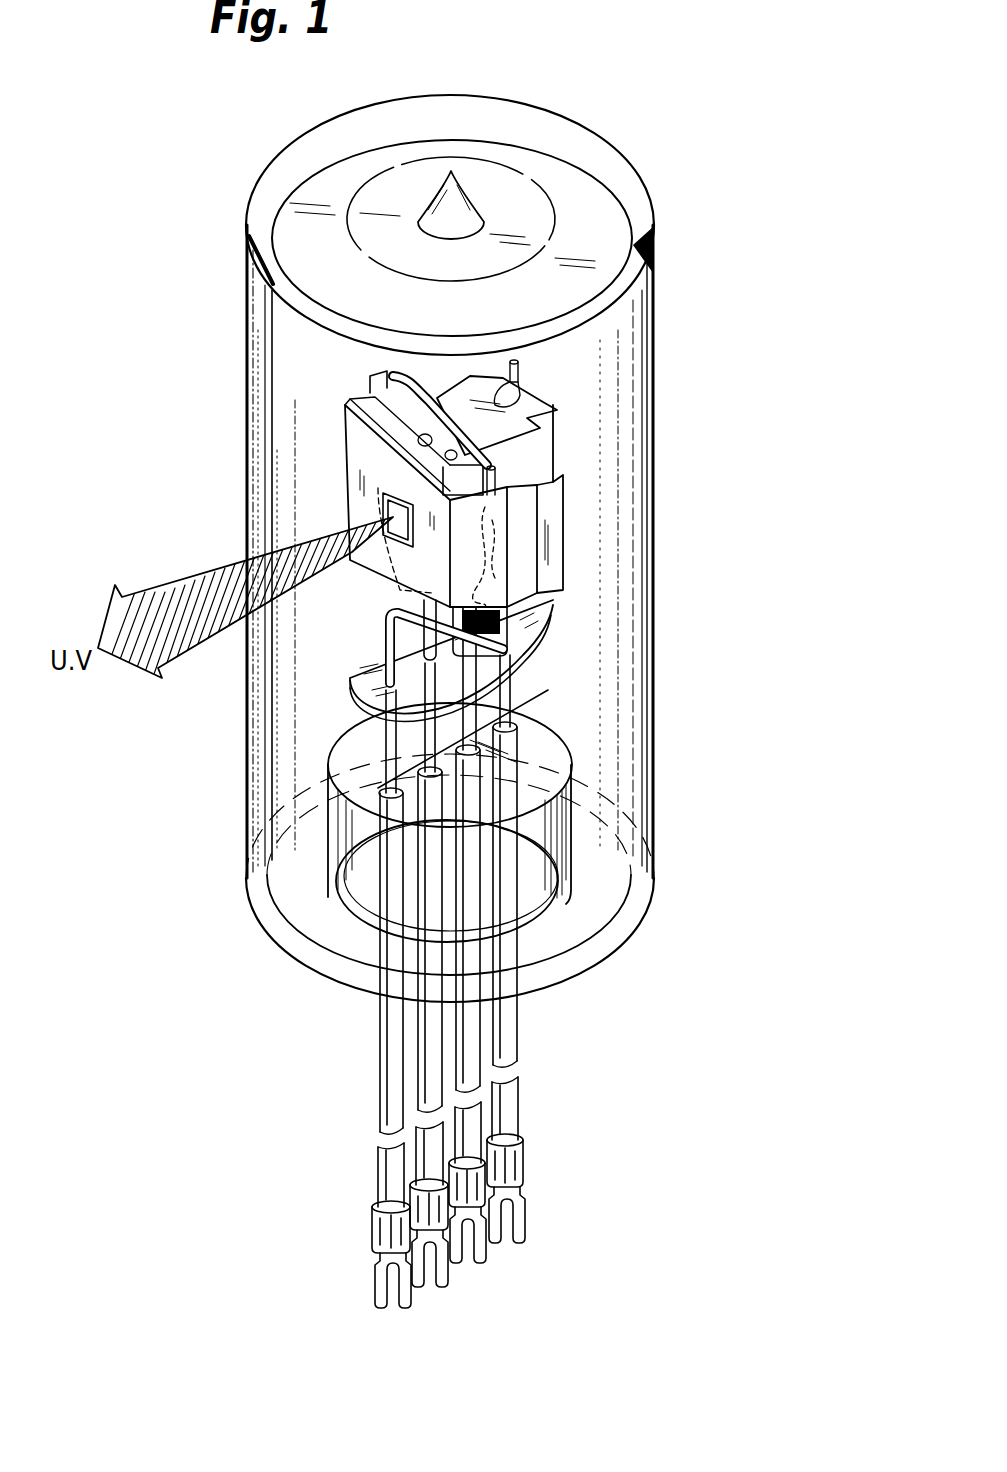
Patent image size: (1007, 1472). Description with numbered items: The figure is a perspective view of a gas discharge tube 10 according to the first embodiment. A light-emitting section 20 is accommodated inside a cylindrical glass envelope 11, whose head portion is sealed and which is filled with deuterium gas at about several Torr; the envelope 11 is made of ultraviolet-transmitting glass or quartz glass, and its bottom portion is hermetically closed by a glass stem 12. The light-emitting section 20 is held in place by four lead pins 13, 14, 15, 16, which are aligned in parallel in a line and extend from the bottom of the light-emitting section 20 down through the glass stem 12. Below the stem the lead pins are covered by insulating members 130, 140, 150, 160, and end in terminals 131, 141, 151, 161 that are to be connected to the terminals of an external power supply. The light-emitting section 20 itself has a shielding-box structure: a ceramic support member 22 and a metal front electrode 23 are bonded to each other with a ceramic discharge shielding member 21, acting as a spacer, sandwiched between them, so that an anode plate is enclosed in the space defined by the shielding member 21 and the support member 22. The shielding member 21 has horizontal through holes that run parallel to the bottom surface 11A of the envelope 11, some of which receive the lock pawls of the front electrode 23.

The gas discharge tube 10 is at (632, 135).
The glass envelope 11 is at (642, 310).
The bottom surface of the envelope 11A is at (588, 900).
The glass stem 12 is at (552, 765).
The lead pin 13 is at (537, 670).
The lead pin 14 is at (537, 704).
The lead pin 15 is at (390, 722).
The lead pin 16 is at (397, 762).
The light-emitting section 20 is at (720, 375).
The discharge shielding member 21 is at (560, 495).
The ceramic support member 22 is at (543, 394).
The front electrode 23 is at (522, 557).
The insulating member 130 is at (517, 1010).
The terminal 131 is at (525, 1213).
The insulating member 140 is at (480, 1050).
The terminal 141 is at (485, 1248).
The insulating member 150 is at (417, 1037).
The terminal 151 is at (450, 1272).
The insulating member 160 is at (378, 1088).
The terminal 161 is at (412, 1295).